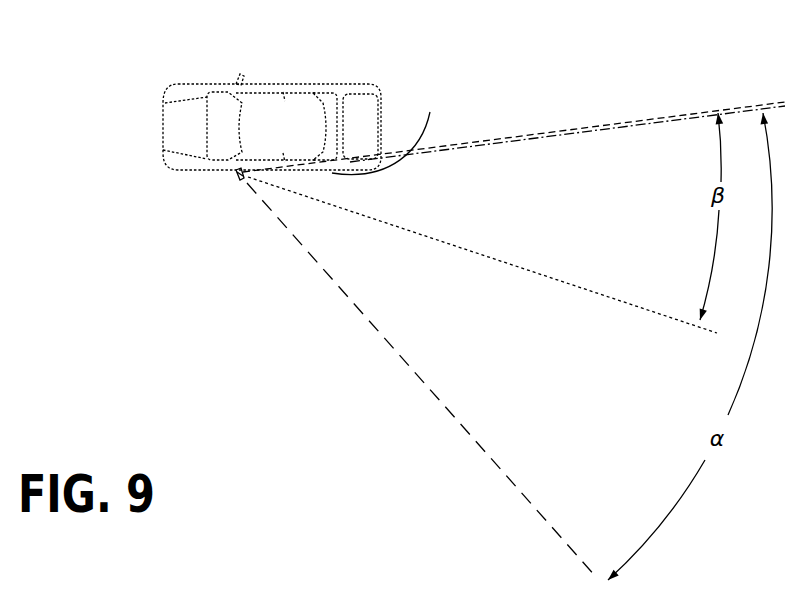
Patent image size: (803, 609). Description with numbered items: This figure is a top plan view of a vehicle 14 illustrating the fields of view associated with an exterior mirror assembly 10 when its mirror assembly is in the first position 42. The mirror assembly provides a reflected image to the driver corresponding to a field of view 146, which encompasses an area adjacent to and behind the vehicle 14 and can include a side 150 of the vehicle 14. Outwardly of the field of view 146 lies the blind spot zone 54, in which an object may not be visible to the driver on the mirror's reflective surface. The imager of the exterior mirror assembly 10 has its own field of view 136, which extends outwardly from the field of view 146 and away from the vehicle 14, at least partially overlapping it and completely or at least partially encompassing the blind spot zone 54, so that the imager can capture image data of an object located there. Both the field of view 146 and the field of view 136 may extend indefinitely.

The exterior mirror assembly 10 is at (232, 180).
The vehicle 14 is at (277, 125).
The first position 42 is at (240, 178).
The blind spot zone 54 is at (516, 334).
The field of view of the imager 136 is at (425, 382).
The field of view of the mirror assembly 146 is at (667, 118).
The side of the vehicle 150 is at (399, 130).